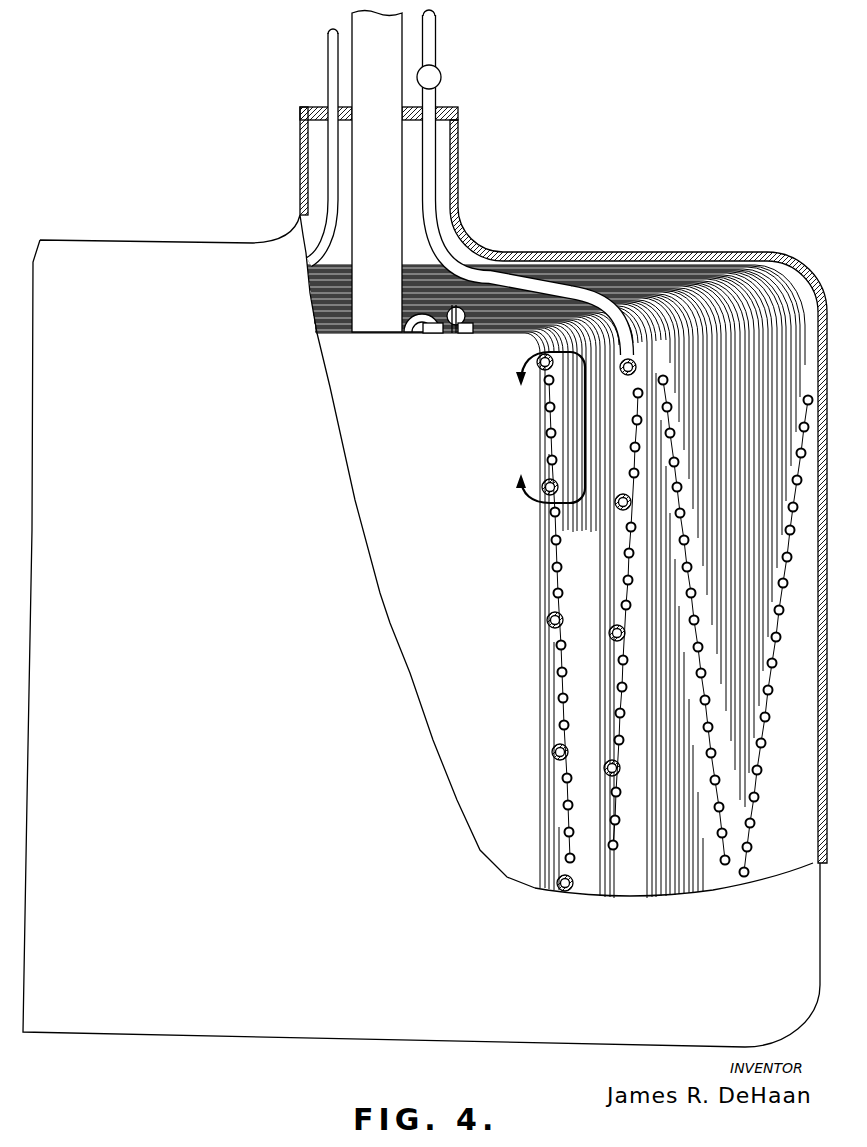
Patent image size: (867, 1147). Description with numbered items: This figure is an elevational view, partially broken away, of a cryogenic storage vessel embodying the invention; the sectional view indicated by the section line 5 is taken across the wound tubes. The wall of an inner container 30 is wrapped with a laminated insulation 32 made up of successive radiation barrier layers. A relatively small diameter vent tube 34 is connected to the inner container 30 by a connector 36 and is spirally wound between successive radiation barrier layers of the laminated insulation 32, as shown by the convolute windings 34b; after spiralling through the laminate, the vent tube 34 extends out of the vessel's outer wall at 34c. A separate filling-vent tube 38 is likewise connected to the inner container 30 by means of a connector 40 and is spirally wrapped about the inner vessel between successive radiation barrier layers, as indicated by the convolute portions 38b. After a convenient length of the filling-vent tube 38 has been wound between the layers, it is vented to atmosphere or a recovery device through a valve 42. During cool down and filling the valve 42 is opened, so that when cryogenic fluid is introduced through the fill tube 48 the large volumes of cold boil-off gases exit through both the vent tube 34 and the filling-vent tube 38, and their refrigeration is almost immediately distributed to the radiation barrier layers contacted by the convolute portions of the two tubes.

The section line 5- 5 is at (548, 427).
The inner container 30 is at (560, 581).
The laminated insulation 32 is at (755, 278).
The vent tube 34 is at (452, 320).
The convolute windings 34b is at (558, 564).
The vent tube extension 34c is at (330, 56).
The connector 36 is at (467, 334).
The filling-vent tube 38 is at (418, 307).
The convolute portions of the filling-vent tube 38b is at (550, 619).
The connector 40 is at (428, 332).
The valve 42 is at (441, 75).
The fill tube 48 is at (368, 30).